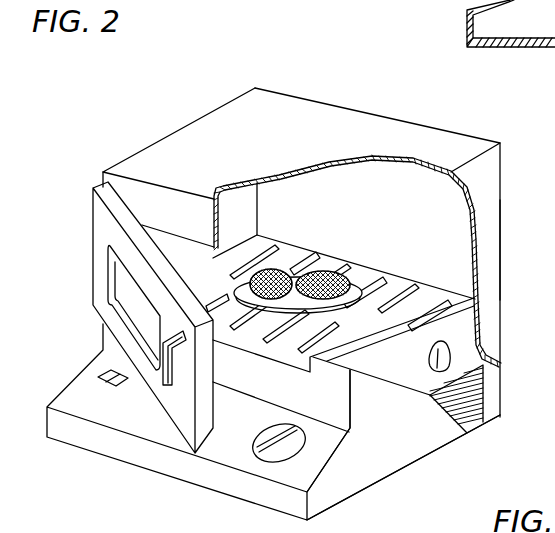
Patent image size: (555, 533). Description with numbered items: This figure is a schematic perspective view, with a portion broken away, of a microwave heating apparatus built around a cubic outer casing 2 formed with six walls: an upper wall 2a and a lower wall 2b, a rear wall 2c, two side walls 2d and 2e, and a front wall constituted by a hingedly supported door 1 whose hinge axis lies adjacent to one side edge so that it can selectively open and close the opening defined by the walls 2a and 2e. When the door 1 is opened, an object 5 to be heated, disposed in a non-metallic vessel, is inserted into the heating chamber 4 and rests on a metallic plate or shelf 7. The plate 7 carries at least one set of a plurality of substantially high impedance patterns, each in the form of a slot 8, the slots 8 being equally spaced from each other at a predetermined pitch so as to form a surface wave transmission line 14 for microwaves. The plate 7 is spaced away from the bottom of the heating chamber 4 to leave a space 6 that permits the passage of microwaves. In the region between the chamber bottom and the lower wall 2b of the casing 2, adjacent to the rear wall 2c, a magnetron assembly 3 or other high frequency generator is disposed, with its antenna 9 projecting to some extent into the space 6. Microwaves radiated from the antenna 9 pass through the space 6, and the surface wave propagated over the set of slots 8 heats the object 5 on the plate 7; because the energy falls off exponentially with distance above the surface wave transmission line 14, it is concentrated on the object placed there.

The door 1 is at (180, 413).
The outer casing 2 is at (335, 483).
The upper wall 2a is at (433, 155).
The lower wall 2b is at (402, 473).
The rear wall 2c is at (502, 261).
The side wall 2d is at (488, 226).
The side wall 2e is at (197, 122).
The magnetron assembly 3 is at (467, 387).
The heating chamber 4 is at (302, 206).
The object to be heated 5 is at (333, 268).
The space 6 is at (416, 376).
The metallic plate 7 is at (388, 293).
The slots 8 is at (403, 292).
The antenna 9 is at (453, 345).
The surface wave transmission line 14 is at (297, 257).